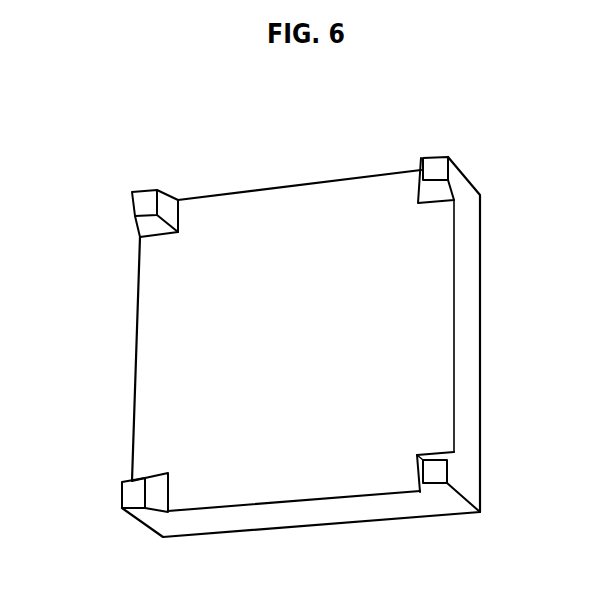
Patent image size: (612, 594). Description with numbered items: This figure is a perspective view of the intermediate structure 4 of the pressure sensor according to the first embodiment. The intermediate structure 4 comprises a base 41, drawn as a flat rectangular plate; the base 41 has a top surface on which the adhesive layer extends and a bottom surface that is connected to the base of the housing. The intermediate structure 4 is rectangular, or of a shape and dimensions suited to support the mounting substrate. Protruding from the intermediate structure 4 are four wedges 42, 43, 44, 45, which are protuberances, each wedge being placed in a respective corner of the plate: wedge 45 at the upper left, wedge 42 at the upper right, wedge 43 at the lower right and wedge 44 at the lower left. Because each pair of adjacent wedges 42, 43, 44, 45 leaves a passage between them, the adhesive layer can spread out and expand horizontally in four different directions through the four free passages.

The intermediate structure 4 is at (290, 317).
The base 41 is at (393, 343).
The wedge 42 is at (432, 165).
The wedge 43 is at (435, 472).
The wedge 44 is at (130, 497).
The wedge 45 is at (140, 198).